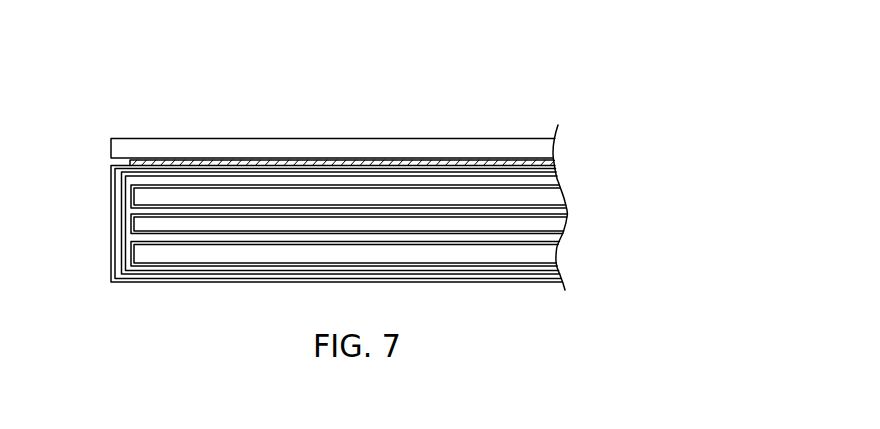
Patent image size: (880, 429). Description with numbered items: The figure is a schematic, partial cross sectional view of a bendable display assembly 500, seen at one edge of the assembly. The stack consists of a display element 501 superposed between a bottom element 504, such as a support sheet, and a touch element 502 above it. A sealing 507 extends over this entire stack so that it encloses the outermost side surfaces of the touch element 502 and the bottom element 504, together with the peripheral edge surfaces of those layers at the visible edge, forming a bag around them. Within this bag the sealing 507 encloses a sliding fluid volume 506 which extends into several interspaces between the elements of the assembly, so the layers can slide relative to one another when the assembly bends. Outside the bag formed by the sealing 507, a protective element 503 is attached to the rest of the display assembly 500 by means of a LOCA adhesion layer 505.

The display assembly 500 is at (118, 75).
The display element 501 is at (233, 222).
The touch element 502 is at (290, 186).
The protective element 503 is at (302, 150).
The bottom element 504 is at (285, 253).
The LOCA adhesion layer 505 is at (403, 162).
The sliding fluid volume 506 is at (125, 235).
The sealing 507 is at (115, 208).